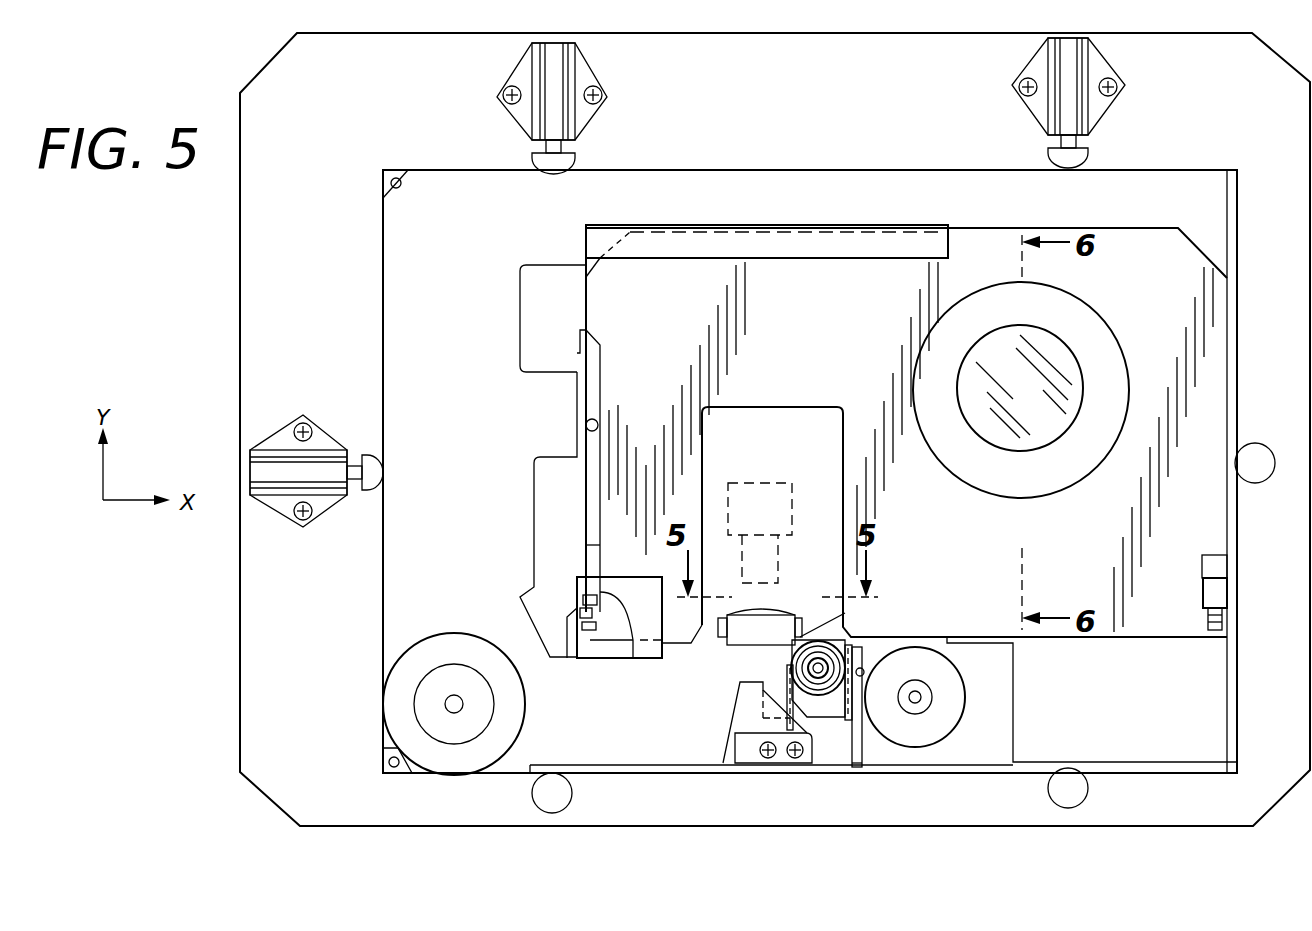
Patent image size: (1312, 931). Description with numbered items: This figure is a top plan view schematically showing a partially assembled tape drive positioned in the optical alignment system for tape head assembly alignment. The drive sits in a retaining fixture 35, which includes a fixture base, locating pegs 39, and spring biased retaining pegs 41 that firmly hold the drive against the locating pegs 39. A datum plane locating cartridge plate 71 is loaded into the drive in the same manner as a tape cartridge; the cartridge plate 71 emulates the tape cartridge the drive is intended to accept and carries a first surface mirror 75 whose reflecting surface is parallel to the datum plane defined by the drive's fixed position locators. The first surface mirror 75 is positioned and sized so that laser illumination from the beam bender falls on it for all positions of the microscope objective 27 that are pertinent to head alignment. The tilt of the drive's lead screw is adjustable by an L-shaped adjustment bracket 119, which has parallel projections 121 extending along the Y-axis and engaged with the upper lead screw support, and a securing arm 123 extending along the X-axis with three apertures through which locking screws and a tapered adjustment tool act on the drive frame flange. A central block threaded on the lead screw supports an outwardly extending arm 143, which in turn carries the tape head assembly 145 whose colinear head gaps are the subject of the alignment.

The microscope objective 27 is at (780, 564).
The retaining fixture 35 is at (230, 716).
The locating pegs 39 is at (1250, 478).
The spring biased retaining pegs 41 is at (536, 57).
The datum plane locating cartridge plate 71 is at (1208, 357).
The first surface mirror 75 is at (1035, 432).
The L-shaped adjustment bracket 119 is at (833, 755).
The parallel projections 121 is at (787, 679).
The securing arm 123 is at (783, 763).
The outwardly extending arm 143 is at (845, 613).
The tape head assembly 145 is at (772, 612).